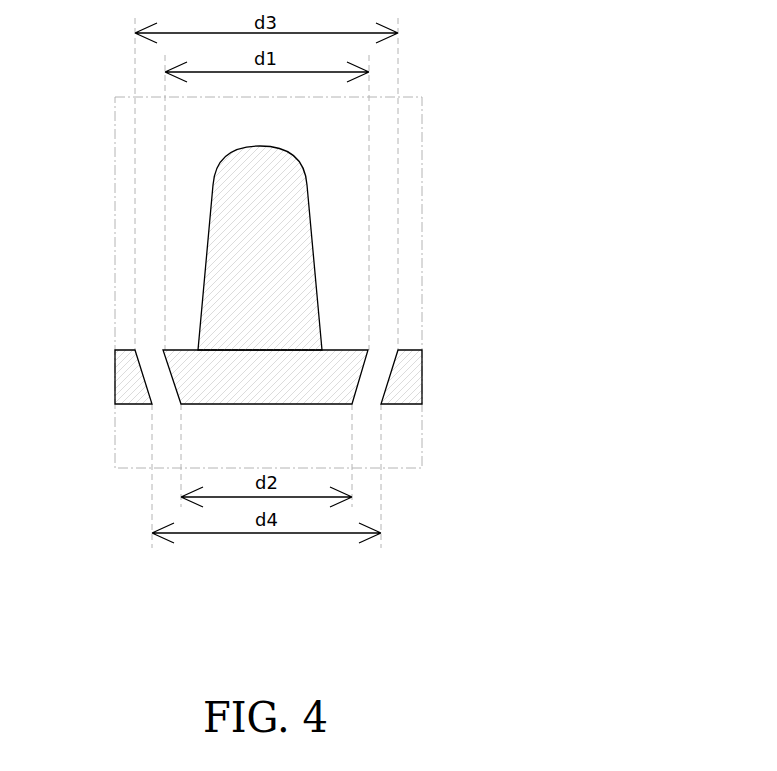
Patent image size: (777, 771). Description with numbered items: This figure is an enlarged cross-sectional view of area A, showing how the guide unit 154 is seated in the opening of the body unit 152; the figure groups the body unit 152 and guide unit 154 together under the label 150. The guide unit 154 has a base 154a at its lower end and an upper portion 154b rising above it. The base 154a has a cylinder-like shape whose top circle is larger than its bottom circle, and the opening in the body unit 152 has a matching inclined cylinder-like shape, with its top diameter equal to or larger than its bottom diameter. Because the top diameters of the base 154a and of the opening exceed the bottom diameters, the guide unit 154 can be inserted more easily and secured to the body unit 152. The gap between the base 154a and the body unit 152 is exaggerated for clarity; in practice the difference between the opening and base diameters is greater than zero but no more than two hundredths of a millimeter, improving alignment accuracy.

The area A is at (115, 95).
The spacer structure (152,154) 150 is at (348, 384).
The body unit 152 is at (400, 383).
The guide unit 154 is at (372, 275).
The base 154a is at (335, 362).
The upper portion of protrusion 154b is at (275, 240).